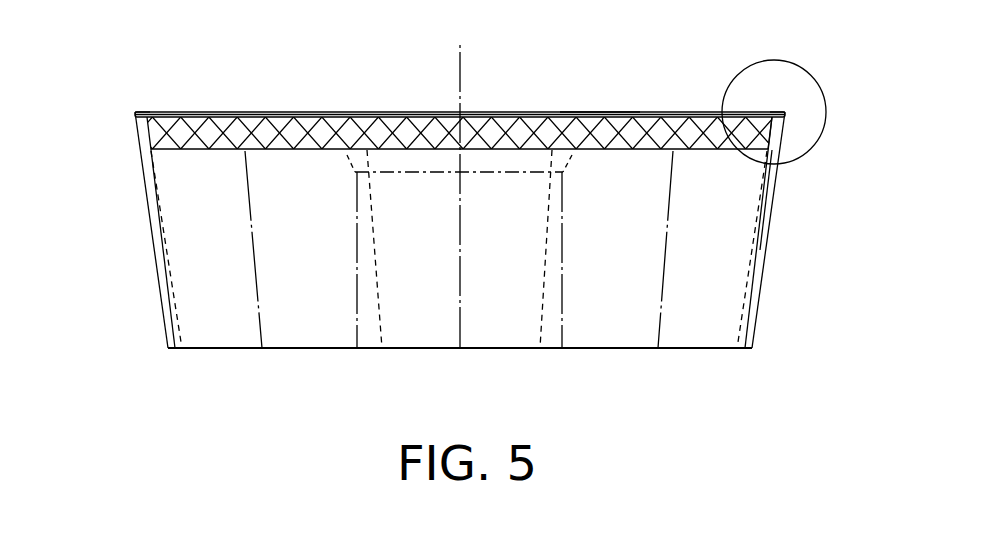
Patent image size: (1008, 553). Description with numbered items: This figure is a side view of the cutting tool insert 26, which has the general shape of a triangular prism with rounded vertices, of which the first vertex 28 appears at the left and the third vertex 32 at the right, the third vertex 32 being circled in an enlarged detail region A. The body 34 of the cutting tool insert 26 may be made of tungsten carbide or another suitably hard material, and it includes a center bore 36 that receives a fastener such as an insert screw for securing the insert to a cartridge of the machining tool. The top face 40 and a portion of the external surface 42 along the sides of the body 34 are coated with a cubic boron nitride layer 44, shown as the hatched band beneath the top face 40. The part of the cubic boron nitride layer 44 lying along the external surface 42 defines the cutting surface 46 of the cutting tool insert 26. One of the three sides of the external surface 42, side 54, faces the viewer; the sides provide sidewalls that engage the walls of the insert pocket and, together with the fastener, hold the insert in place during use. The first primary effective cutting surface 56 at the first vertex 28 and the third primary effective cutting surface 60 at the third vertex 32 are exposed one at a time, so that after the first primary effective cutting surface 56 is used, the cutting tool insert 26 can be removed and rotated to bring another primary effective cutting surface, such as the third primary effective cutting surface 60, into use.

The cutting tool insert 26 is at (320, 100).
The first vertex 28 is at (127, 227).
The third vertex 32 is at (783, 187).
The body 34 is at (315, 312).
The center bore 36 is at (497, 272).
The top face 40 is at (600, 95).
The external surface 42 is at (617, 243).
The cubic boron nitride layer 44 is at (680, 110).
The cutting surface 46 is at (783, 137).
The side 54 is at (660, 357).
The first primary effective cutting surface 56 is at (127, 98).
The third primary effective cutting surface 60 is at (788, 102).
The detail region A is at (826, 90).